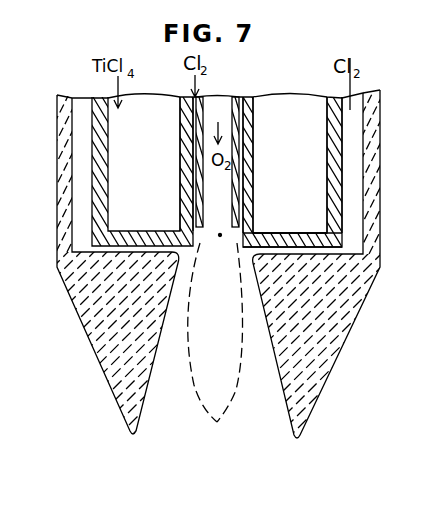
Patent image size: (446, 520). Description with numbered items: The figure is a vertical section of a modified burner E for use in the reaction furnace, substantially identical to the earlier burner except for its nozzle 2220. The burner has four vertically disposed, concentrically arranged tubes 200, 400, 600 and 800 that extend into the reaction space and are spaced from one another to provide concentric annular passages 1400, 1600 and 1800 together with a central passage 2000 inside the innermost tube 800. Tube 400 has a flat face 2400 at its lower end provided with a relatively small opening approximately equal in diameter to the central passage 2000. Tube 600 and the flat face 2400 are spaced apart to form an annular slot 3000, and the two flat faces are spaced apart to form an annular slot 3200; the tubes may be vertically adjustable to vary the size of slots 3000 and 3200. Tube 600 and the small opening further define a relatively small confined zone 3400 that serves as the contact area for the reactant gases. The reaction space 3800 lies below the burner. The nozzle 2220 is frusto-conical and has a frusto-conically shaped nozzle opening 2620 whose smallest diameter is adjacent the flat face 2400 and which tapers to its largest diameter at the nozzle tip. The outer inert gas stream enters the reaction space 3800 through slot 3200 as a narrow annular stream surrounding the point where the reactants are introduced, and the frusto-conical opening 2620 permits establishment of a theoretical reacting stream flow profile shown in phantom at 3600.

The tube 200 is at (375, 149).
The modified burner E is at (57, 158).
The annular passage 1400 is at (355, 114).
The nozzle opening 2620 is at (140, 426).
The nozzle 2220 is at (335, 363).
The annular slot 3000 is at (178, 228).
The annular passage 1800 is at (186, 97).
The central passage 2000 is at (217, 104).
The tube 800 is at (239, 97).
The annular passage 1600 is at (308, 109).
The tube 600 is at (253, 122).
The tube 400 is at (327, 154).
The flat face 2400 is at (340, 227).
The annular slot 3200 is at (308, 236).
The confined zone 3400 is at (220, 234).
The reaction space 3800 is at (208, 440).
The reacting stream flow profile 3600 is at (230, 403).